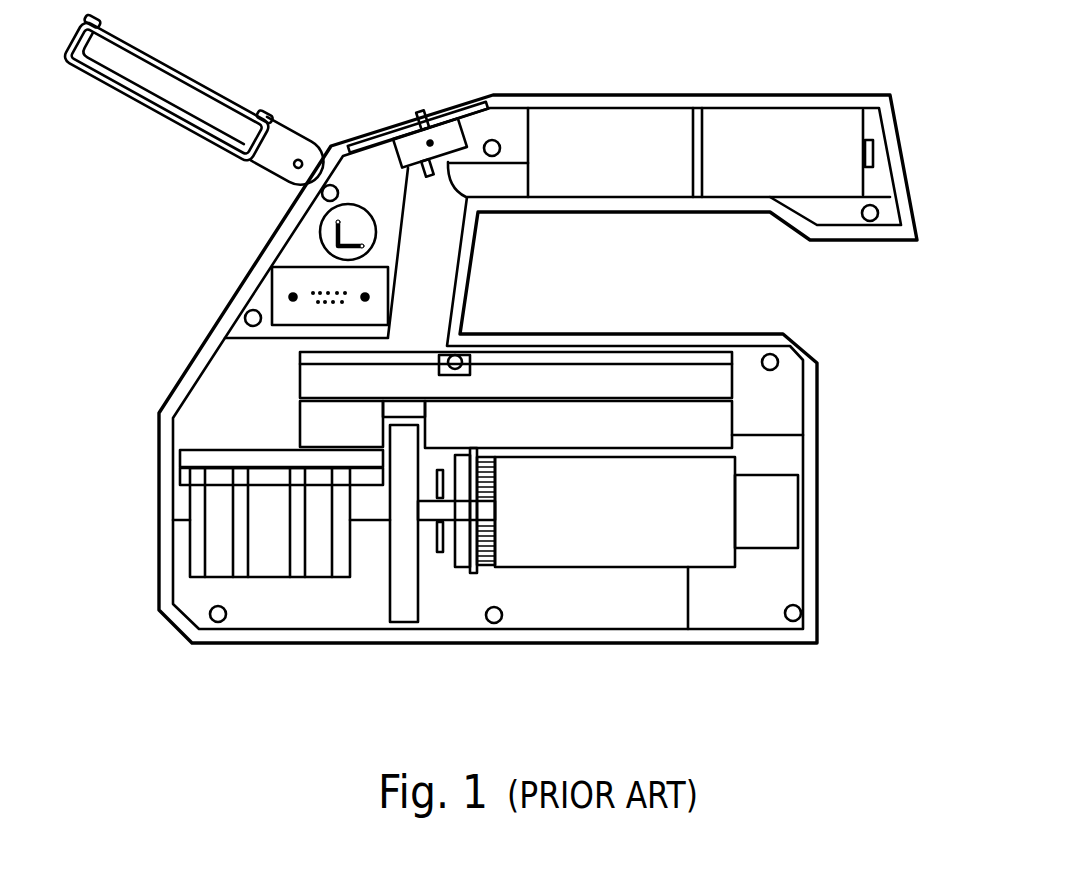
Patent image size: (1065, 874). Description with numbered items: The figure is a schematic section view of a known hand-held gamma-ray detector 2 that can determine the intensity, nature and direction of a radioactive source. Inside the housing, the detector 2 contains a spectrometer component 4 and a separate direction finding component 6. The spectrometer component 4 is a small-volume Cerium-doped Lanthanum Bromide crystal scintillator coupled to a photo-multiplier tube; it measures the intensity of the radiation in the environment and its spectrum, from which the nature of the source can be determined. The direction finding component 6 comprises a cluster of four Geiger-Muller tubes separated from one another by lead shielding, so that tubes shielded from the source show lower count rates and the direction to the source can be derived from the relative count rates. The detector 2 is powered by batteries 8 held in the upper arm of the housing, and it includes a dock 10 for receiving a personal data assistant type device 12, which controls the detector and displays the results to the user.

The hand-held gamma-ray detector 2 is at (817, 644).
The spectrometer component 4 is at (783, 518).
The direction finding component 6 is at (277, 492).
The batteries 8 is at (702, 156).
The dock 10 is at (283, 140).
The personal data assistant (PDA) type device 12 is at (230, 73).